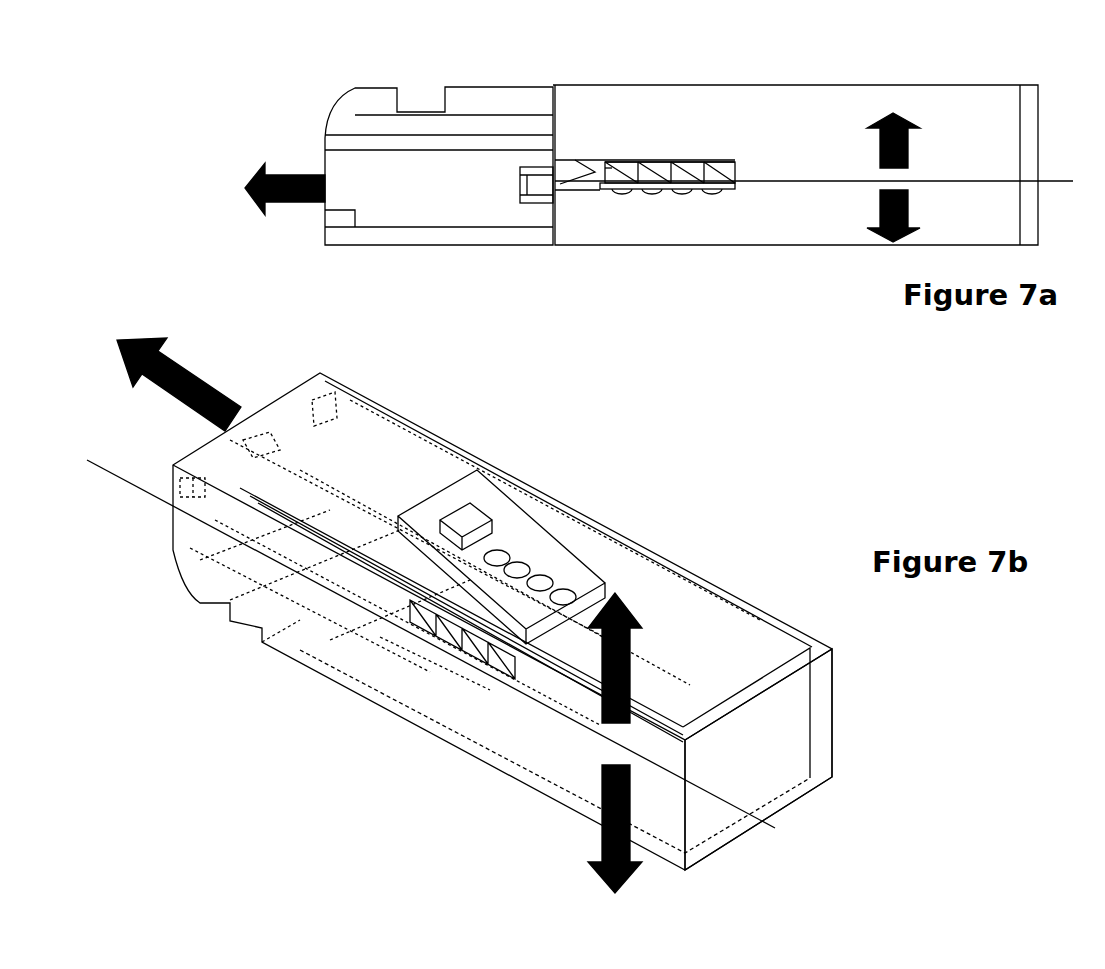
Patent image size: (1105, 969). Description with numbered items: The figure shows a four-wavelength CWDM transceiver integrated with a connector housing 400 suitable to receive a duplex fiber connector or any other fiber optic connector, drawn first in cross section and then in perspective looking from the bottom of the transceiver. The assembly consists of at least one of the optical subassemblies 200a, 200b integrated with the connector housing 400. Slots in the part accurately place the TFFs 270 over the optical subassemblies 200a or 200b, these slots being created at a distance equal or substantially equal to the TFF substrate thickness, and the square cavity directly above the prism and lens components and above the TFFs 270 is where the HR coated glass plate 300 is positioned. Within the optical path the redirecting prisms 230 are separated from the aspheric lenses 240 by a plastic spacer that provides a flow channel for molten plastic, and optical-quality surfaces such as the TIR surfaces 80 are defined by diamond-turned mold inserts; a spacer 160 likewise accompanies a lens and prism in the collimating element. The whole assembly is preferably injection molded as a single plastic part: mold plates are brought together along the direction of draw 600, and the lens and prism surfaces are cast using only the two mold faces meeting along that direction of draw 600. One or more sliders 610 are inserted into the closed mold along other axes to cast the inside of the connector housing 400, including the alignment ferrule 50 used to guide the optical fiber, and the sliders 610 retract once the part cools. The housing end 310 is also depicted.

In FIG. 7a, the alignment ferrule 50 is at (525, 207).
In FIG. 7b, the alignment ferrule 50 is at (377, 516).
In FIG. 7a, the TIR surfaces 80 is at (568, 190).
In FIG. 7b, the TIR surfaces 80 is at (468, 522).
In FIG. 7a, the spacer 160 is at (739, 186).
In FIG. 7a, the optical subassembly 200a is at (667, 146).
In FIG. 7b, the optical subassembly 200a is at (464, 702).
In FIG. 7a, the optical subassembly 200b is at (735, 141).
In FIG. 7b, the optical subassembly 200b is at (548, 633).
In FIG. 7a, the redirecting prisms 230 is at (611, 176).
In FIG. 7a, the aspheric lenses 240 is at (719, 196).
In FIG. 7b, the aspheric lenses 240 is at (522, 570).
In FIG. 7a, the TFFs 270 is at (733, 158).
In FIG. 7a, the HR coated glass plate 300 is at (674, 84).
In FIG. 7b, the housing end 310 is at (758, 794).
In FIG. 7a, the connector housing 400 is at (363, 172).
In FIG. 7a, the direction of draw 600 is at (912, 177).
In FIG. 7b, the direction of draw 600 is at (629, 743).
In FIG. 7a, the sliders 610 is at (285, 199).
In FIG. 7b, the sliders 610 is at (179, 384).